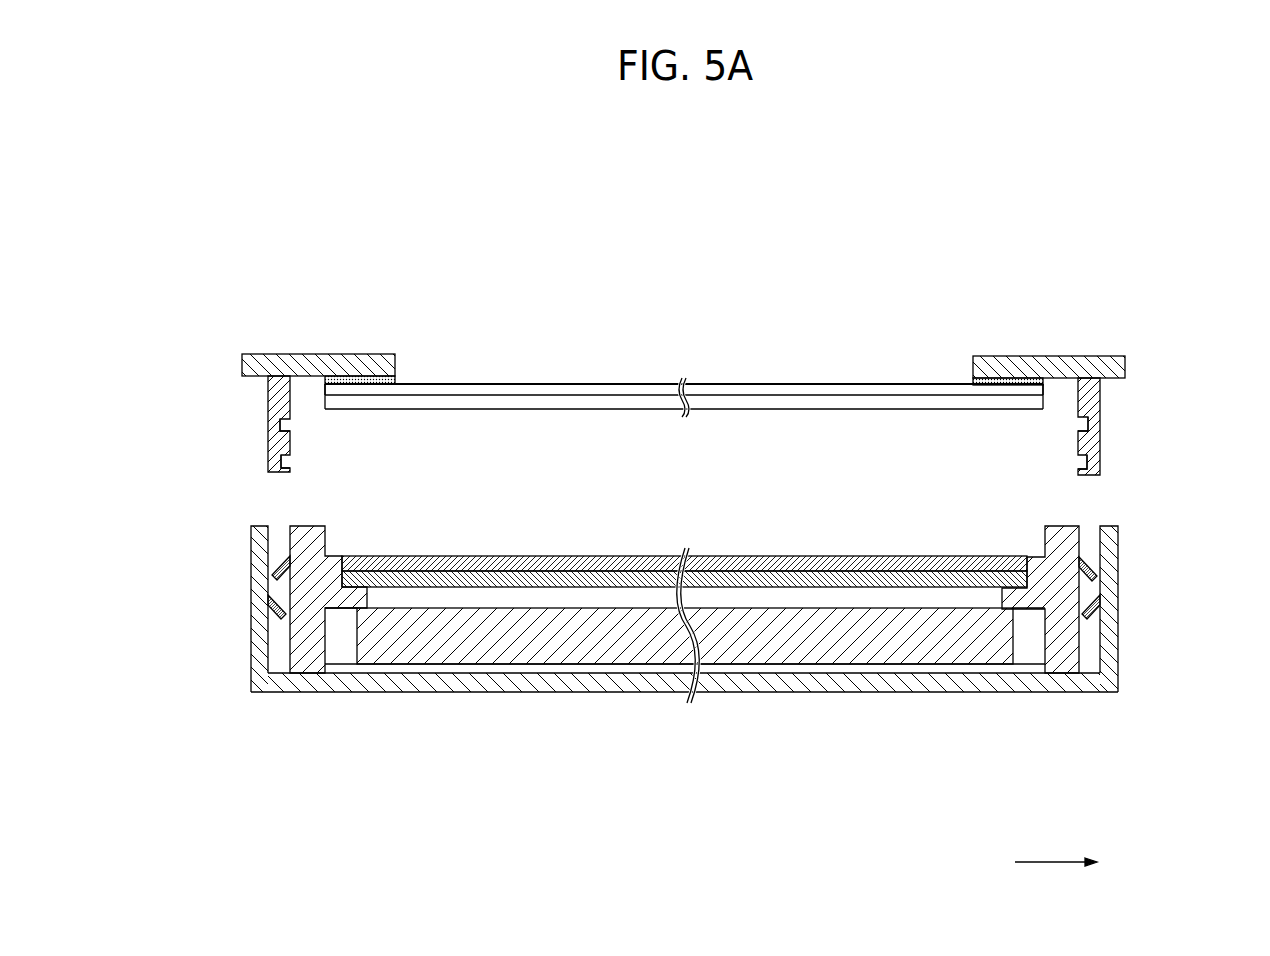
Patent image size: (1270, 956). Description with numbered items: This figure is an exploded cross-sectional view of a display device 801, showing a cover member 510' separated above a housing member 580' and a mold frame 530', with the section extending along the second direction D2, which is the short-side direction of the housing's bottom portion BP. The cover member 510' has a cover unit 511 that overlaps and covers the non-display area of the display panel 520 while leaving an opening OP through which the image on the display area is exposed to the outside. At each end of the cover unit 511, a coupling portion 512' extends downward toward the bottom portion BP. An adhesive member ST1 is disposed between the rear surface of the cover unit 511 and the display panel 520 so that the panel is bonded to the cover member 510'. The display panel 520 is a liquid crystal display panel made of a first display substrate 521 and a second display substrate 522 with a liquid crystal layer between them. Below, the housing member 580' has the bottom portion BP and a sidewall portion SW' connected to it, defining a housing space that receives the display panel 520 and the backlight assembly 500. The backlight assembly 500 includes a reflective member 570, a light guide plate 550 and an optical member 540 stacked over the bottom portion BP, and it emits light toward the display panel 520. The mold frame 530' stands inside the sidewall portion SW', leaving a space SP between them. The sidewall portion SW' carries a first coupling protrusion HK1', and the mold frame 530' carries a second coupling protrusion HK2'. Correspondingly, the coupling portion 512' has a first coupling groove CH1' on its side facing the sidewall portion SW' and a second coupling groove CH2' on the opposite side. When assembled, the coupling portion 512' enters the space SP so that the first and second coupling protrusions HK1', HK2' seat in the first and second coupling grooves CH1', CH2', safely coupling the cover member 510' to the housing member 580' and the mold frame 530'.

The display device 801 is at (1035, 240).
The cover member 510' is at (655, 414).
The cover unit 511 is at (253, 364).
The coupling portion 512' is at (689, 425).
The second coupling groove CH2' is at (689, 432).
The first coupling groove CH1' is at (689, 461).
The adhesive member ST1 is at (358, 372).
The display panel 520 is at (502, 294).
The first display substrate 521 is at (418, 400).
The second display substrate 522 is at (479, 390).
The opening OP is at (754, 368).
The housing member 580' is at (651, 619).
The sidewall portion SW' is at (685, 609).
The bottom portion BP is at (293, 686).
The mold frame 530' is at (680, 647).
The space SP is at (281, 531).
The second coupling protrusion HK2' is at (685, 570).
The first coupling protrusion HK1' is at (685, 606).
The backlight assembly 500 is at (592, 768).
The optical member 540 is at (578, 588).
The light guide plate 550 is at (517, 648).
The reflective member 570 is at (459, 668).
The second direction D2 is at (1070, 862).